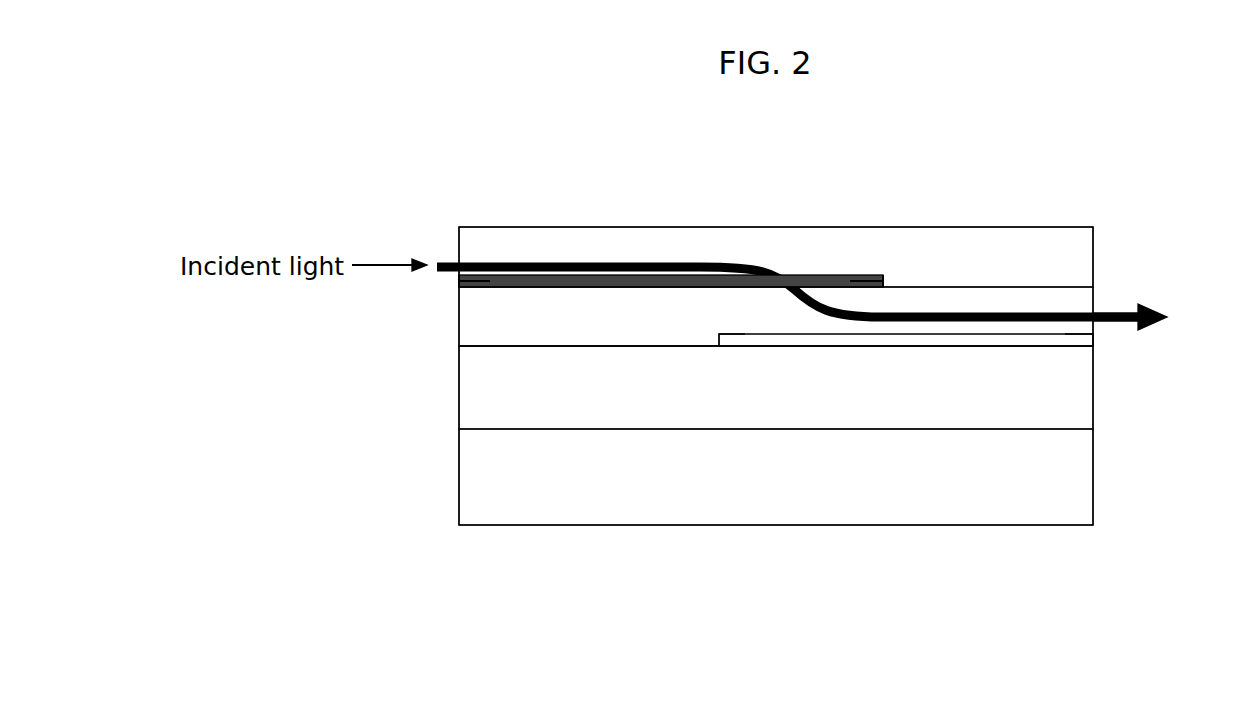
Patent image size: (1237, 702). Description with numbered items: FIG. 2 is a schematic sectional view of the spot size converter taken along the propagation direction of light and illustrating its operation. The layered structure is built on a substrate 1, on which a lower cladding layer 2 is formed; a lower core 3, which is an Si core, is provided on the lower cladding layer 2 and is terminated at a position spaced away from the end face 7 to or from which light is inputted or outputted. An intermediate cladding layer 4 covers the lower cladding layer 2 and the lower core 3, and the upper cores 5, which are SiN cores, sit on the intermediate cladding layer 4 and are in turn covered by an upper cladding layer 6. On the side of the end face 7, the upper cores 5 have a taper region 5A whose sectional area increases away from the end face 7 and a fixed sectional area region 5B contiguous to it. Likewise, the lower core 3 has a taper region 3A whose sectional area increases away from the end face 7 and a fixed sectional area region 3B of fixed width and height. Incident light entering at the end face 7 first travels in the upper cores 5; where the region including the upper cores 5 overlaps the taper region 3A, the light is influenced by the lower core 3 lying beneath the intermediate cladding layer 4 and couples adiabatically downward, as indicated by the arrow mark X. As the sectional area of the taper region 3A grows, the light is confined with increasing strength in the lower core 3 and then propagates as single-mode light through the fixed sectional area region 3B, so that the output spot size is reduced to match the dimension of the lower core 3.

The substrate 1 is at (473, 472).
The lower cladding layer 2 is at (475, 381).
The lower core 3 is at (1000, 339).
The taper region 3A is at (793, 343).
The fixed sectional area region 3B is at (1062, 338).
The intermediate cladding layer 4 is at (1078, 299).
The upper cores 5 is at (811, 272).
The taper region 5A is at (488, 288).
The fixed sectional area region 5B is at (858, 276).
The upper cladding layer 6 is at (1030, 238).
The end face 7 is at (457, 248).
The arrow mark X is at (1118, 326).